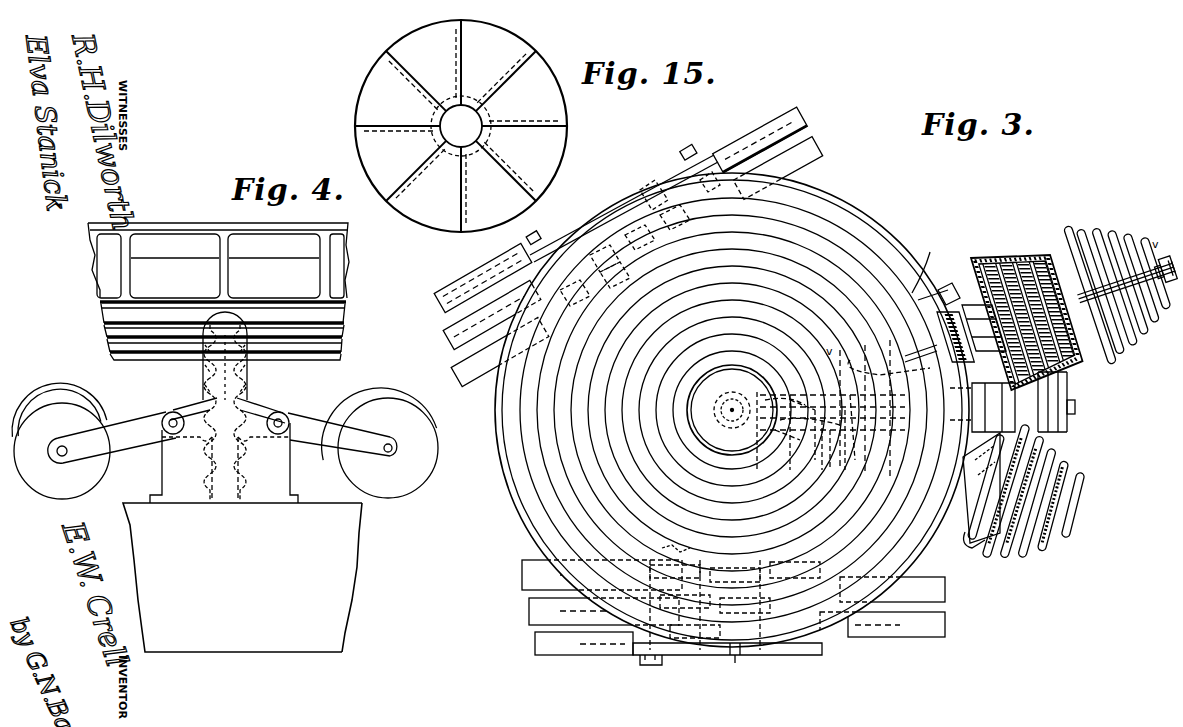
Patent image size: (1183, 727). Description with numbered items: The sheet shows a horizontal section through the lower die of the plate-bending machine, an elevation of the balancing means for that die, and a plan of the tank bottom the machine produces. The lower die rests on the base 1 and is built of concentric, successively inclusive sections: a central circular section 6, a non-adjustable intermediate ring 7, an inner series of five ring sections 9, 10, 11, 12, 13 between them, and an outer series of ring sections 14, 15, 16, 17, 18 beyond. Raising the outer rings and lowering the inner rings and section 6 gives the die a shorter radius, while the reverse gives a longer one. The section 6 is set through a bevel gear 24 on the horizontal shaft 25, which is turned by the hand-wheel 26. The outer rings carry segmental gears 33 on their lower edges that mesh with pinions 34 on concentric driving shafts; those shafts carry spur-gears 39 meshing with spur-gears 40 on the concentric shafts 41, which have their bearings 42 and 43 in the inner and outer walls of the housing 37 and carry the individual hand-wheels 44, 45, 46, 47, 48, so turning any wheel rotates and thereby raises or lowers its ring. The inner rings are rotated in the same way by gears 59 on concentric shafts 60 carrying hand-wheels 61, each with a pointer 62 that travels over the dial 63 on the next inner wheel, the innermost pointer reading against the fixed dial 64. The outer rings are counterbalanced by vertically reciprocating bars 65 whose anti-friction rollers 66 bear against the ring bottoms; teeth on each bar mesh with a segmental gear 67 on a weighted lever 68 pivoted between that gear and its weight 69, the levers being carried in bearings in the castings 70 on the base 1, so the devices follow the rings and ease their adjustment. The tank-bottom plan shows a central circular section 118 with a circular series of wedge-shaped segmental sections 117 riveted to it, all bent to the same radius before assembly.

In FIG. 4, the base 1 is at (242, 577).
In FIG. 3, the central circular section 6 is at (732, 410).
In FIG. 3, the intermediate ring 7 is at (732, 410).
In FIG. 3, the inner concentric ring section 9 is at (732, 410).
In FIG. 3, the inner concentric ring section 10 is at (732, 410).
In FIG. 3, the inner concentric ring section 11 is at (732, 410).
In FIG. 3, the inner concentric ring section 12 is at (732, 410).
In FIG. 3, the inner concentric ring section 13 is at (732, 410).
In FIG. 4, the outer concentric ring section 14 is at (340, 362).
In FIG. 3, the outer concentric ring section 14 is at (732, 410).
In FIG. 4, the outer concentric ring section 15 is at (342, 347).
In FIG. 3, the outer concentric ring section 15 is at (732, 410).
In FIG. 4, the outer concentric ring section 16 is at (345, 330).
In FIG. 3, the outer concentric ring section 16 is at (732, 410).
In FIG. 4, the outer concentric ring section 17 is at (343, 310).
In FIG. 3, the outer concentric ring section 17 is at (732, 410).
In FIG. 4, the outer concentric ring section 18 is at (348, 250).
In FIG. 3, the outer concentric ring section 18 is at (732, 410).
In FIG. 3, the bevel gear 24 is at (732, 398).
In FIG. 3, the horizontal shaft 25 is at (1084, 407).
In FIG. 3, the hand-wheel 26 is at (1068, 388).
In FIG. 3, the segmental gear 33 is at (922, 270).
In FIG. 3, the pinion 34 is at (950, 285).
In FIG. 3, the housing 37 is at (990, 262).
In FIG. 3, the spur-gear 39 is at (1020, 262).
In FIG. 3, the spur-gear 40 is at (1080, 365).
In FIG. 3, the concentric shaft 41 is at (1157, 243).
In FIG. 3, the bearing 42 is at (990, 355).
In FIG. 3, the bearing 43 is at (1065, 284).
In FIG. 3, the hand-wheel 44 is at (1086, 264).
In FIG. 3, the hand-wheel 45 is at (1112, 258).
In FIG. 3, the hand-wheel 46 is at (1121, 263).
In FIG. 3, the hand-wheel 47 is at (1138, 245).
In FIG. 3, the hand-wheel 48 is at (1152, 244).
In FIG. 3, the gear 59 is at (785, 465).
In FIG. 3, the concentric shaft 60 is at (1084, 522).
In FIG. 3, the hand-wheel 61 is at (1062, 458).
In FIG. 3, the pointer 62 is at (1075, 490).
In FIG. 3, the dial 63 is at (1035, 555).
In FIG. 3, the fixed dial 64 is at (968, 538).
In FIG. 4, the vertically reciprocating bar 65 is at (240, 378).
In FIG. 4, the anti-friction roller 66 is at (208, 370).
In FIG. 3, the anti-friction roller 66 is at (636, 188).
In FIG. 4, the segmental gear 67 is at (248, 404).
In FIG. 4, the weighted lever 68 is at (132, 422).
In FIG. 3, the weighted lever 68 is at (697, 158).
In FIG. 4, the weight 69 is at (64, 400).
In FIG. 3, the weight 69 is at (808, 123).
In FIG. 4, the casting 70 is at (224, 463).
In FIG. 15, the segmental section 117 is at (516, 86).
In FIG. 15, the central circular section 118 is at (461, 126).